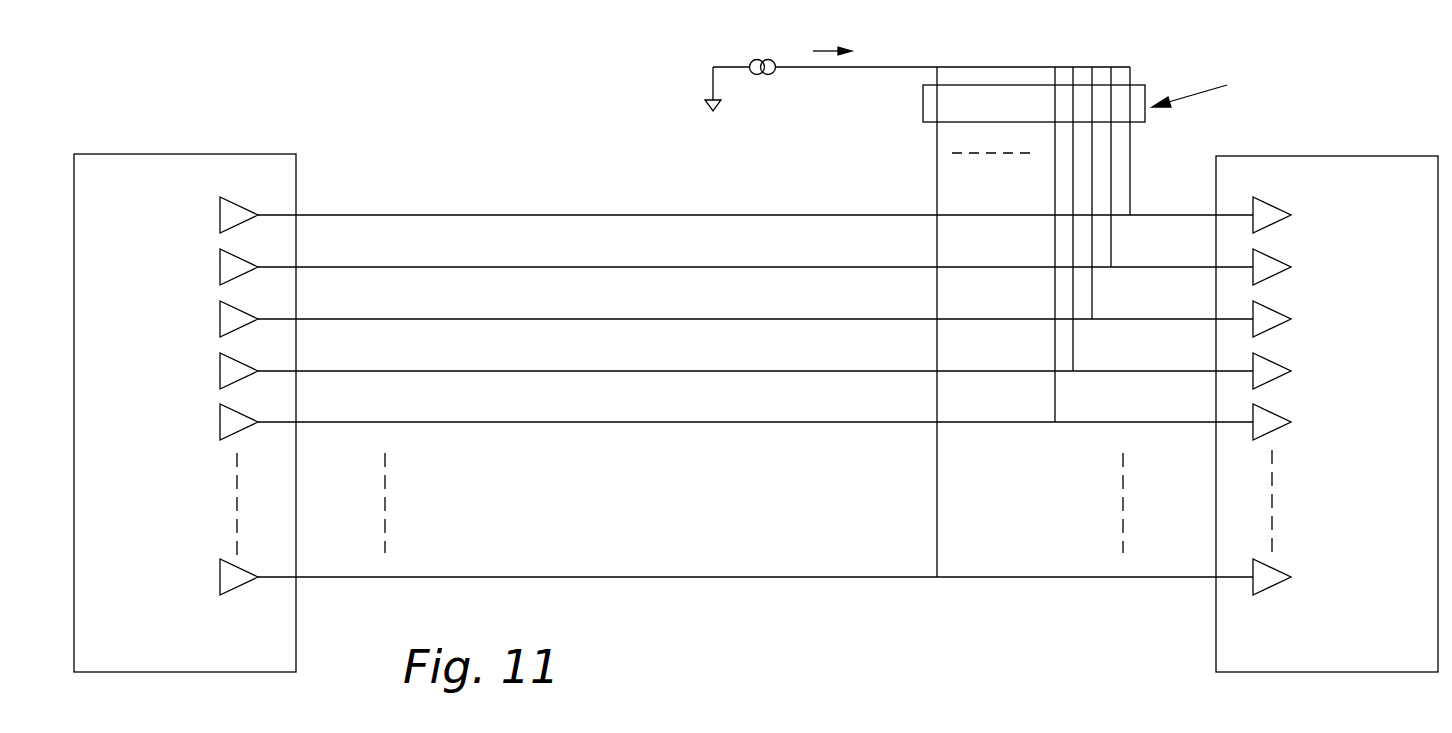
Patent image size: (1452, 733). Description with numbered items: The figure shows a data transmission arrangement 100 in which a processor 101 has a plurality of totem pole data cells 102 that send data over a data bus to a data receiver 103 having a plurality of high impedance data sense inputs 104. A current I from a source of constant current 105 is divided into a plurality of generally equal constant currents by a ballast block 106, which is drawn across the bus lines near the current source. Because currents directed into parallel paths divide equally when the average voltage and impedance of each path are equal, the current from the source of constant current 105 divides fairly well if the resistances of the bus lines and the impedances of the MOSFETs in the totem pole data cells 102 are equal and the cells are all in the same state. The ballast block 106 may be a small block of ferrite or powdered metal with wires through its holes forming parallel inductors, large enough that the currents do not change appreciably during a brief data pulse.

The data transmission system 100 is at (607, 45).
The processor 101 is at (253, 140).
The totem pole data cells 102 is at (248, 197).
The data receiver 103 is at (1346, 148).
The high impedance data sense inputs 104 is at (1231, 190).
The source of constant current 105 is at (780, 48).
The ballast block 106 is at (1027, 97).